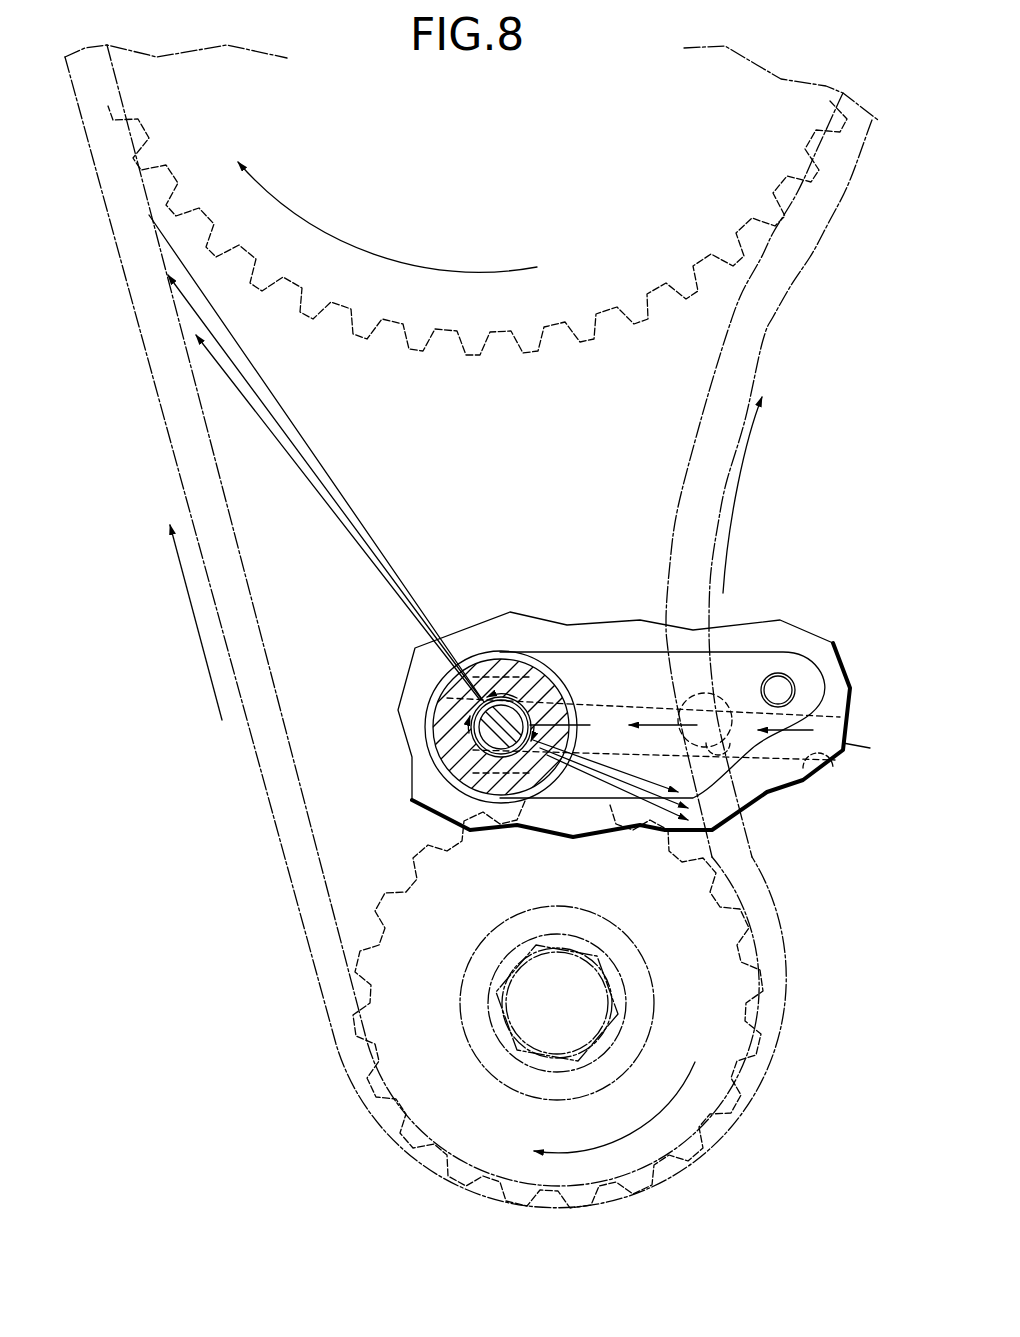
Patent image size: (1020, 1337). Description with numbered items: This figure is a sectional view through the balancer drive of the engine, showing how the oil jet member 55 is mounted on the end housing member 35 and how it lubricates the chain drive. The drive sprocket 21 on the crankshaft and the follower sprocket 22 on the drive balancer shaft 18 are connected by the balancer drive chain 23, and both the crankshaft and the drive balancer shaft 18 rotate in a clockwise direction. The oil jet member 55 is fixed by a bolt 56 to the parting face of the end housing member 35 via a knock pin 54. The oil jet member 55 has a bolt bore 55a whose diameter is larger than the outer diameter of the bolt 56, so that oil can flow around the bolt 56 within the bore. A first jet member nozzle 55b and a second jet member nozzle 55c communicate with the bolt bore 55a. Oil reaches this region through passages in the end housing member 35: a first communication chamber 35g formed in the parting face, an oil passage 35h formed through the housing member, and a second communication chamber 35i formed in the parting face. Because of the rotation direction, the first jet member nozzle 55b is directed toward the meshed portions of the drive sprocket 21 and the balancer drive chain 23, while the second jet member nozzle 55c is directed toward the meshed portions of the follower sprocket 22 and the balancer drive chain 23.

The drive balancer shaft 18 is at (541, 1073).
The drive sprocket 21 is at (525, 353).
The follower sprocket 22 is at (397, 862).
The balancer drive chain 23 is at (269, 818).
The end housing member 35 is at (757, 616).
The first communication chamber 35g is at (835, 763).
The oil passage 35h is at (745, 745).
The second communication chamber 35i is at (643, 708).
The knock pin 54 is at (778, 682).
The oil jet member 55 is at (607, 648).
The bolt bore 55a is at (457, 748).
The first jet member nozzle 55b is at (470, 690).
The second jet member nozzle 55c is at (558, 765).
The bolt 56 is at (500, 742).